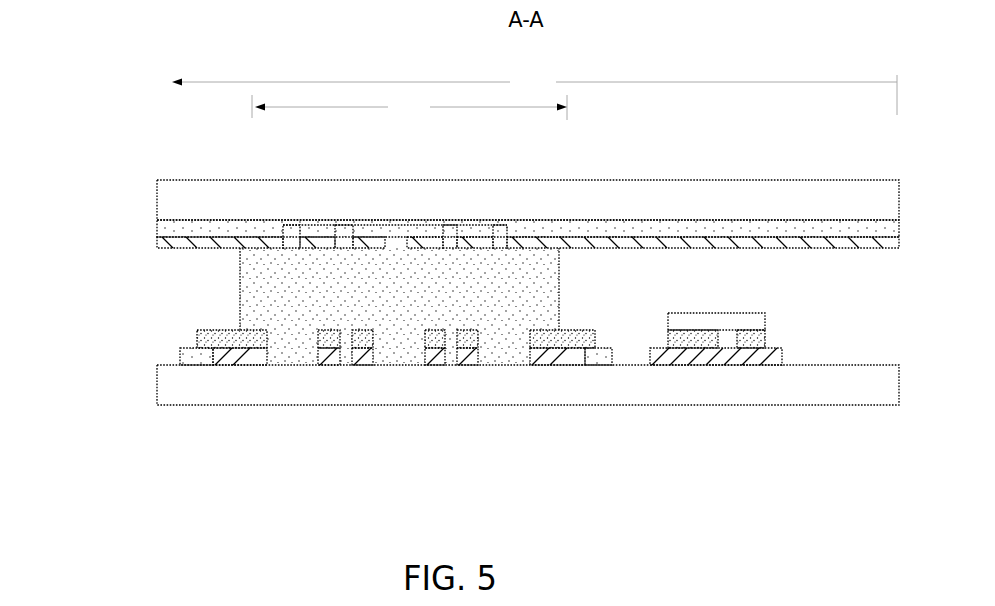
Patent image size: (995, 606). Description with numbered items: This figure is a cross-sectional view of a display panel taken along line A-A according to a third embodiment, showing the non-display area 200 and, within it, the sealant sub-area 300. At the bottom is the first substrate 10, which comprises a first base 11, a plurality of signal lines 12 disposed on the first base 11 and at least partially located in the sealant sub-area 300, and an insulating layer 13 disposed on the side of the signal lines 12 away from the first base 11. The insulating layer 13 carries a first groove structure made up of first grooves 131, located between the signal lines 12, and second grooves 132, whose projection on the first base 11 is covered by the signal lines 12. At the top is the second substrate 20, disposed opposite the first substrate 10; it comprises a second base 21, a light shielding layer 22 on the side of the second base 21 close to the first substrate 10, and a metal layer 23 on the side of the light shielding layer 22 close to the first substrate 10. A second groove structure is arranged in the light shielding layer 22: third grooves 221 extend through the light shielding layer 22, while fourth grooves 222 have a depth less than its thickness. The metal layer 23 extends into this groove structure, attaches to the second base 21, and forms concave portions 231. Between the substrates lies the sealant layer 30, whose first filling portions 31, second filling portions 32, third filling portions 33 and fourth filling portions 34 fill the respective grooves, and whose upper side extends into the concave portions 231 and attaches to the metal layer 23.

The first substrate 10 is at (78, 322).
The first base 11 is at (210, 388).
The signal lines 12 is at (233, 348).
The insulating layer 13 is at (225, 340).
The first grooves 131 is at (473, 357).
The second grooves 132 is at (436, 345).
The second substrate 20 is at (78, 180).
The second base 21 is at (228, 200).
The light shielding layer 22 is at (224, 232).
The third grooves 221 is at (465, 228).
The fourth grooves 222 is at (516, 229).
The metal layer 23 is at (204, 246).
The concave portions 231 is at (339, 236).
The sealant layer 30 is at (277, 293).
The first filling portions 31 is at (290, 350).
The second filling portions 32 is at (343, 345).
The third filling portions 33 is at (452, 236).
The fourth filling portions 34 is at (298, 236).
The non-display area 200 is at (534, 93).
The sealant sub-area 300 is at (409, 107).